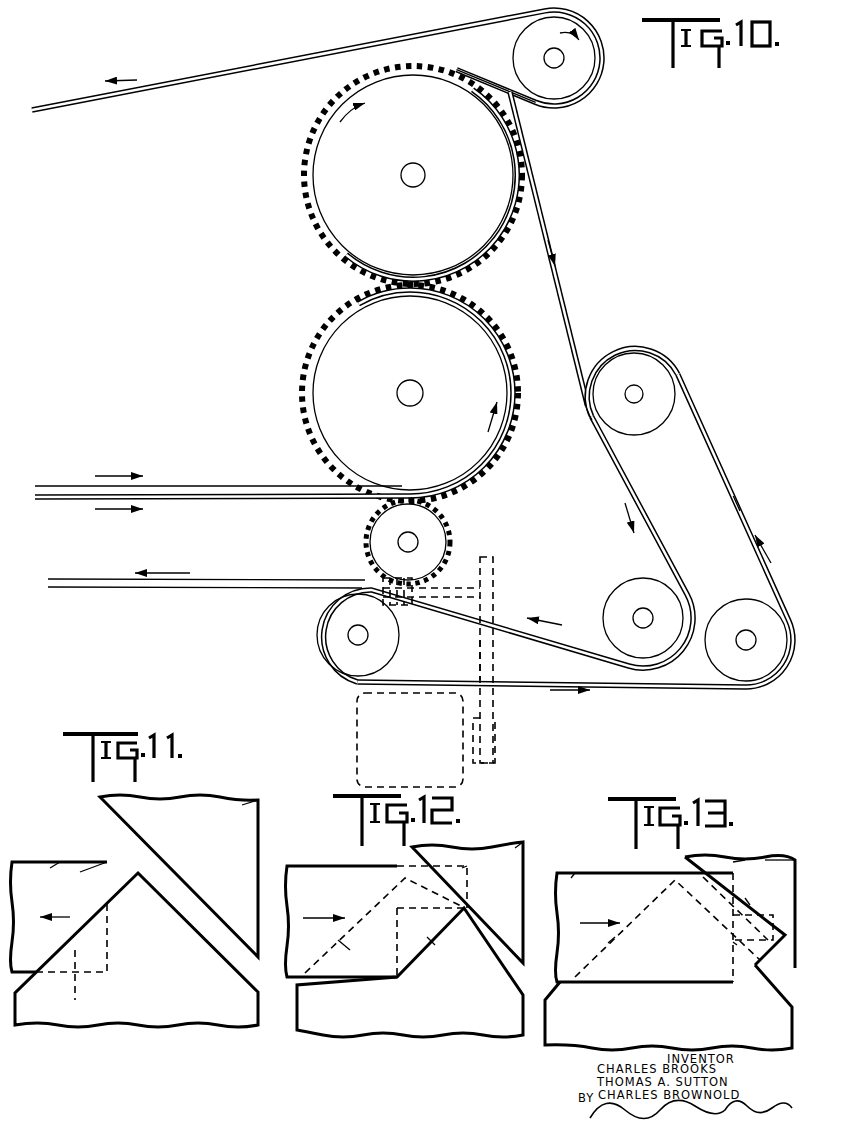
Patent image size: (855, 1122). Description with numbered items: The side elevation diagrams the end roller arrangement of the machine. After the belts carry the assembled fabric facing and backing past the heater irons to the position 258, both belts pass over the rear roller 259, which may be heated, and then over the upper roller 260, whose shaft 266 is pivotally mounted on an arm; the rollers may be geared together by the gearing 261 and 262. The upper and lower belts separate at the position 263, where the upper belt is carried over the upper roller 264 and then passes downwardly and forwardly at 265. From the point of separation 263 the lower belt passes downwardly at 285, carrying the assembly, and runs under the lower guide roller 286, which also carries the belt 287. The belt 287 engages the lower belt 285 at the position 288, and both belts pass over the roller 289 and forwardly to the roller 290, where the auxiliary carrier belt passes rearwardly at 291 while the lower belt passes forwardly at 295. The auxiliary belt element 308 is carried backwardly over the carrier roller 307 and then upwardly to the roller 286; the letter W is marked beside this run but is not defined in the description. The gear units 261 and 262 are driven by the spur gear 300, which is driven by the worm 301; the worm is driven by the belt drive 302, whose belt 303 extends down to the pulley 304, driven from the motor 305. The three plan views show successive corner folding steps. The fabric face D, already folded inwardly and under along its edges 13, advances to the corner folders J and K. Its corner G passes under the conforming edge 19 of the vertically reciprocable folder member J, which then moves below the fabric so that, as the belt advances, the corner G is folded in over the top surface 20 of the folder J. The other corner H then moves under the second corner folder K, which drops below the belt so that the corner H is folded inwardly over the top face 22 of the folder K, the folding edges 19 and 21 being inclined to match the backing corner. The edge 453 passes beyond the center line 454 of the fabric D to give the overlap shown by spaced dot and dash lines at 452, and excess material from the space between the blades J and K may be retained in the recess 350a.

In FIG. 10, the position 258 is at (292, 493).
In FIG. 10, the rear roller 259 is at (325, 365).
In FIG. 10, the upper roller 260 is at (330, 173).
In FIG. 10, the gearing 261 is at (327, 322).
In FIG. 10, the gearing 262 is at (310, 214).
In FIG. 10, the point of separation 263 is at (517, 97).
In FIG. 10, the upper roller 264 is at (575, 80).
In FIG. 10, the downward and forward run of upper belt 265 is at (200, 78).
In FIG. 10, the shaft 266 is at (422, 177).
In FIG. 10, the lower belt 285 is at (540, 227).
In FIG. 10, the lower guide roller 286 is at (652, 370).
In FIG. 10, the belt 287 is at (612, 355).
In FIG. 10, the position 288 is at (584, 413).
In FIG. 10, the roller 289 is at (625, 592).
In FIG. 10, the roller 290 is at (328, 642).
In FIG. 10, the rearward run of auxiliary carrier belt 291 is at (418, 678).
In FIG. 10, the forward run of lower belt 295 is at (230, 592).
In FIG. 10, the spur gear 300 is at (443, 520).
In FIG. 10, the worm 301 is at (433, 583).
In FIG. 10, the belt drive 302 is at (495, 562).
In FIG. 10, the belt 303 is at (493, 660).
In FIG. 10, the pulley 304 is at (497, 735).
In FIG. 10, the motor 305 is at (357, 708).
In FIG. 10, the carrier roller 307 is at (737, 605).
In FIG. 10, the auxiliary belt element 308 is at (708, 443).
In FIG. 10, the web W is at (742, 499).
In FIG. 11, the edges 13 is at (20, 858).
In FIG. 12, the edges 13 is at (293, 866).
In FIG. 13, the edges 13 is at (590, 878).
In FIG. 11, the conforming edge 19 is at (108, 902).
In FIG. 12, the conforming edge 19 is at (338, 940).
In FIG. 13, the conforming edge 19 is at (610, 943).
In FIG. 12, the top surface 20 is at (377, 1020).
In FIG. 11, the folding edge 21 is at (135, 830).
In FIG. 12, the folding edge 21 is at (488, 923).
In FIG. 13, the folding edge 21 is at (783, 963).
In FIG. 13, the top face 22 is at (773, 862).
In FIG. 11, the recess 350a is at (177, 895).
In FIG. 13, the overlap 452 is at (752, 906).
In FIG. 12, the edge 453 is at (410, 906).
In FIG. 12, the center line 454 is at (335, 904).
In FIG. 11, the fabric face D is at (50, 868).
In FIG. 13, the fabric face D is at (571, 878).
In FIG. 11, the corner G is at (81, 981).
In FIG. 12, the corner G is at (427, 937).
In FIG. 13, the corner G is at (735, 942).
In FIG. 11, the corner H is at (80, 872).
In FIG. 12, the corner H is at (462, 868).
In FIG. 13, the corner H is at (745, 898).
In FIG. 11, the corner folder J is at (193, 1008).
In FIG. 12, the corner folder J is at (502, 1025).
In FIG. 13, the corner folder J is at (578, 1017).
In FIG. 11, the second corner folder K is at (242, 805).
In FIG. 12, the second corner folder K is at (515, 848).
In FIG. 13, the second corner folder K is at (738, 862).